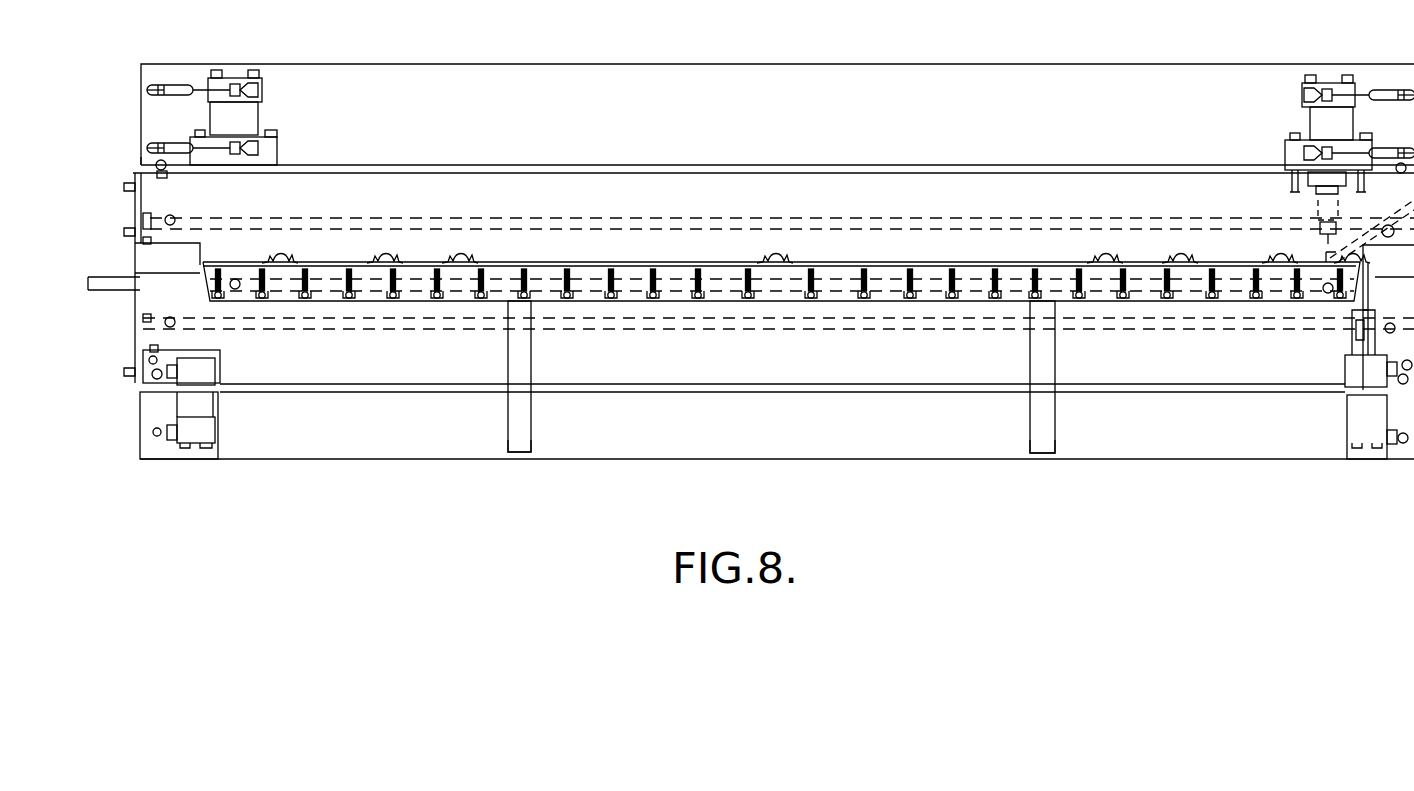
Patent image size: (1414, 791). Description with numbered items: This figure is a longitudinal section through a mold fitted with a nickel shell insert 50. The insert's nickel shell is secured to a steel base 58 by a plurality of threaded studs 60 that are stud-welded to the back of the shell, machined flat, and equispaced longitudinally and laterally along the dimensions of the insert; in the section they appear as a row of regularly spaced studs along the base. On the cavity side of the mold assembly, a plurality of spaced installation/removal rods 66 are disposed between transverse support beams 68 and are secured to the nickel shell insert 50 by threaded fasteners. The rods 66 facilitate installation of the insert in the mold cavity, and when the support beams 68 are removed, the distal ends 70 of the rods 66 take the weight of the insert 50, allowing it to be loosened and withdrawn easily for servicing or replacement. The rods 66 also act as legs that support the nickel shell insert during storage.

The nickel shell insert 50 is at (633, 313).
The steel base 58 is at (416, 303).
The threaded studs 60 is at (750, 283).
The installation/removal rods 66 is at (526, 417).
The transverse support beams 68 is at (879, 436).
The distal ends 70 is at (512, 452).